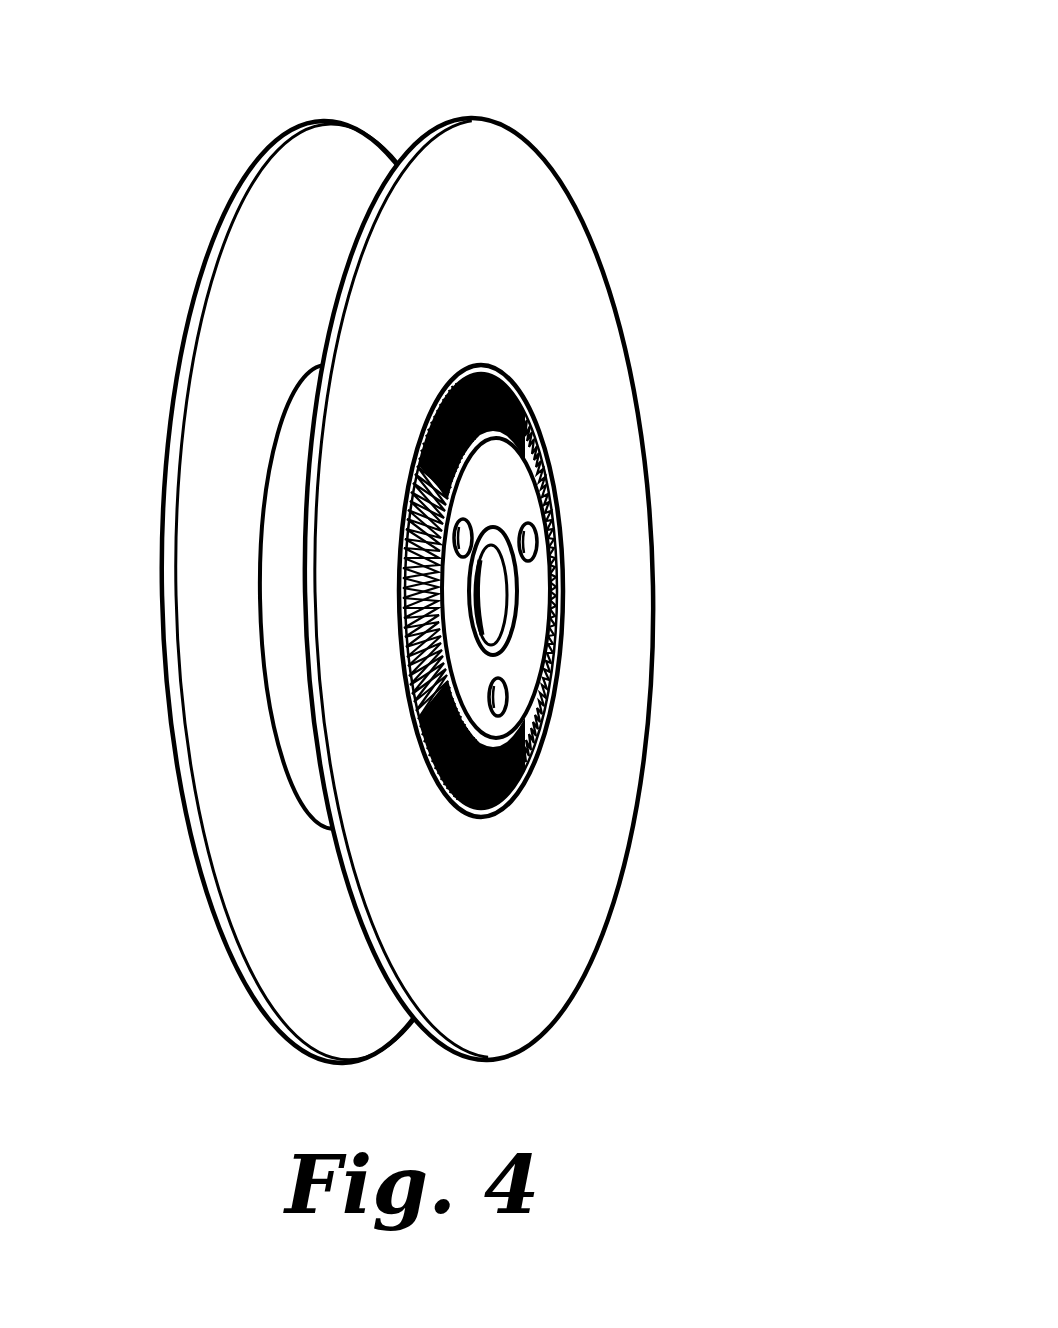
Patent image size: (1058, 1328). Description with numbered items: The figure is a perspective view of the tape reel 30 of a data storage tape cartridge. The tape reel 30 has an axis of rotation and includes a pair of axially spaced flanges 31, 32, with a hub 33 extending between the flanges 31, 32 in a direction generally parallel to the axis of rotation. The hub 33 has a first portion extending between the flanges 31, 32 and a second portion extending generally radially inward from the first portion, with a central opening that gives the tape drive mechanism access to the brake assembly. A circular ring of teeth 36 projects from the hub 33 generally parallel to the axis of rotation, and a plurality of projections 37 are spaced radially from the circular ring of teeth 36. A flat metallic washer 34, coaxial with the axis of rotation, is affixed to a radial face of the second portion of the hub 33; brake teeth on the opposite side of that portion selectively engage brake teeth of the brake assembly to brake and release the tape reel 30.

The tape reel 30 is at (585, 92).
The flange 31 is at (580, 300).
The flange 32 is at (332, 158).
The hub 33 is at (277, 627).
The flat metallic washer 34 is at (528, 658).
The circular ring of teeth 36 is at (520, 410).
The projections 37 is at (512, 380).